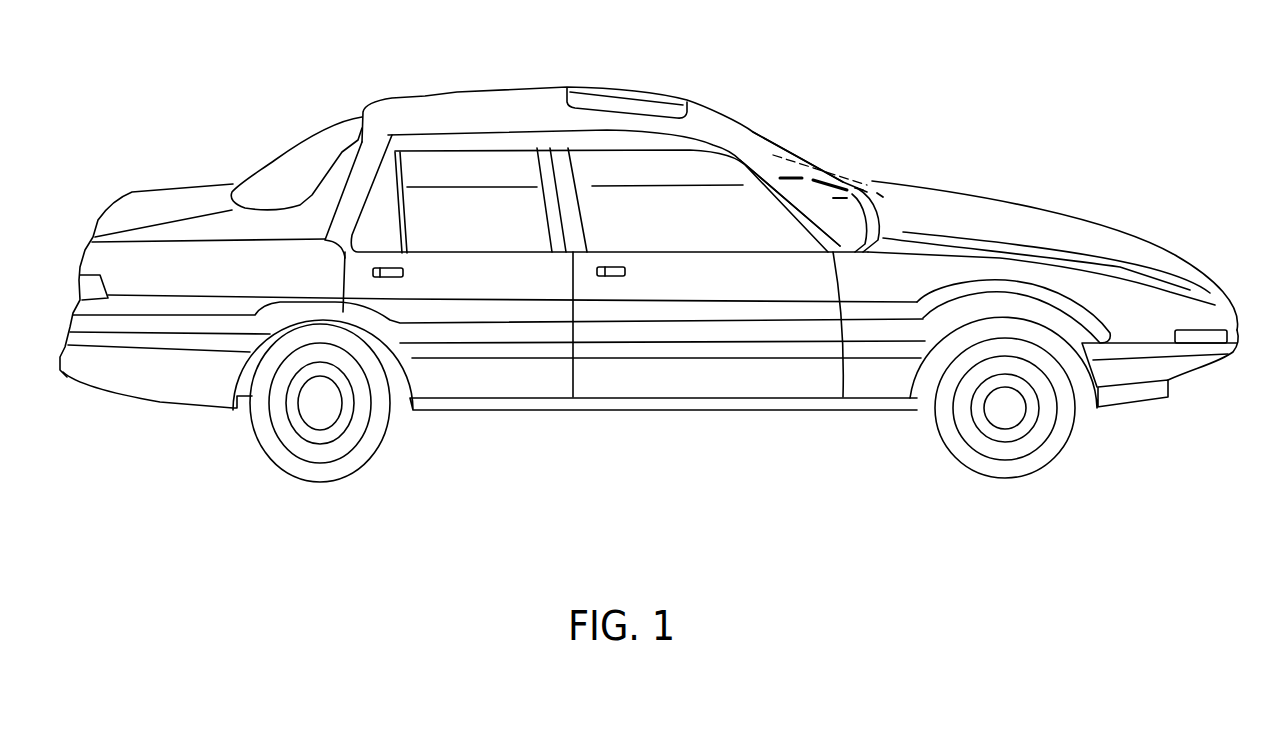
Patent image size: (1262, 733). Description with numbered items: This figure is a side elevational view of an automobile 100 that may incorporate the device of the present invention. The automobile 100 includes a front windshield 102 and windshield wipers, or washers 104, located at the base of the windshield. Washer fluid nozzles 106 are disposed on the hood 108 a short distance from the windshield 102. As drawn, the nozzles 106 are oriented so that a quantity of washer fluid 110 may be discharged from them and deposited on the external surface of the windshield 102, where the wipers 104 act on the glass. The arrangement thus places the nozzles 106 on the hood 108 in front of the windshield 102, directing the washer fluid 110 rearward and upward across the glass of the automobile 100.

The automobile 100 is at (573, 455).
The front windshield 102 is at (762, 145).
The windshield wipers 104 is at (798, 178).
The washer fluid nozzles 106 is at (897, 205).
The hood 108 is at (975, 208).
The washer fluid 110 is at (873, 186).